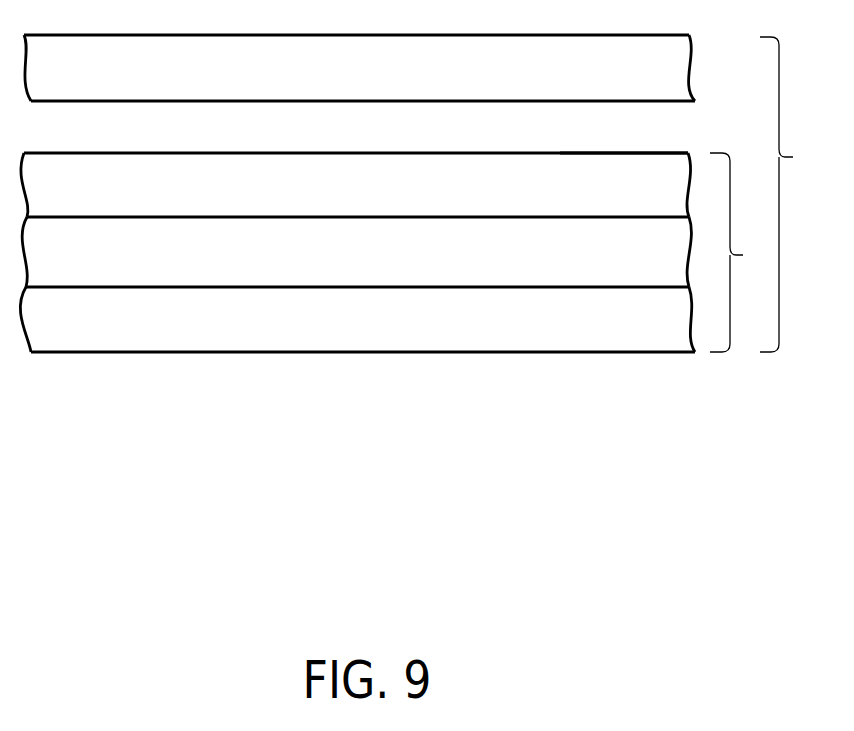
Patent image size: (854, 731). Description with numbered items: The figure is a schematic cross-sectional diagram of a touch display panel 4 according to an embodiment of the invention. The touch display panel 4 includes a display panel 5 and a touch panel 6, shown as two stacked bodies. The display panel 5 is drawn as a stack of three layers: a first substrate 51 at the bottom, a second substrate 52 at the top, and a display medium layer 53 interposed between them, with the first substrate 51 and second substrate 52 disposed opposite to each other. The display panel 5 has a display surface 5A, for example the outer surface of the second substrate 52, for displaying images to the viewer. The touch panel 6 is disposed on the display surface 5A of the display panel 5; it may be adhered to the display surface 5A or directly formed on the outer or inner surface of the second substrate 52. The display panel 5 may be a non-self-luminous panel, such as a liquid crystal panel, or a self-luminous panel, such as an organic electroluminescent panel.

The touch display panel 4 is at (787, 194).
The display panel 5 is at (738, 252).
The display surface 5A is at (616, 150).
The touch panel 6 is at (662, 66).
The first substrate 51 is at (375, 338).
The second substrate 52 is at (375, 201).
The display medium layer 53 is at (375, 268).